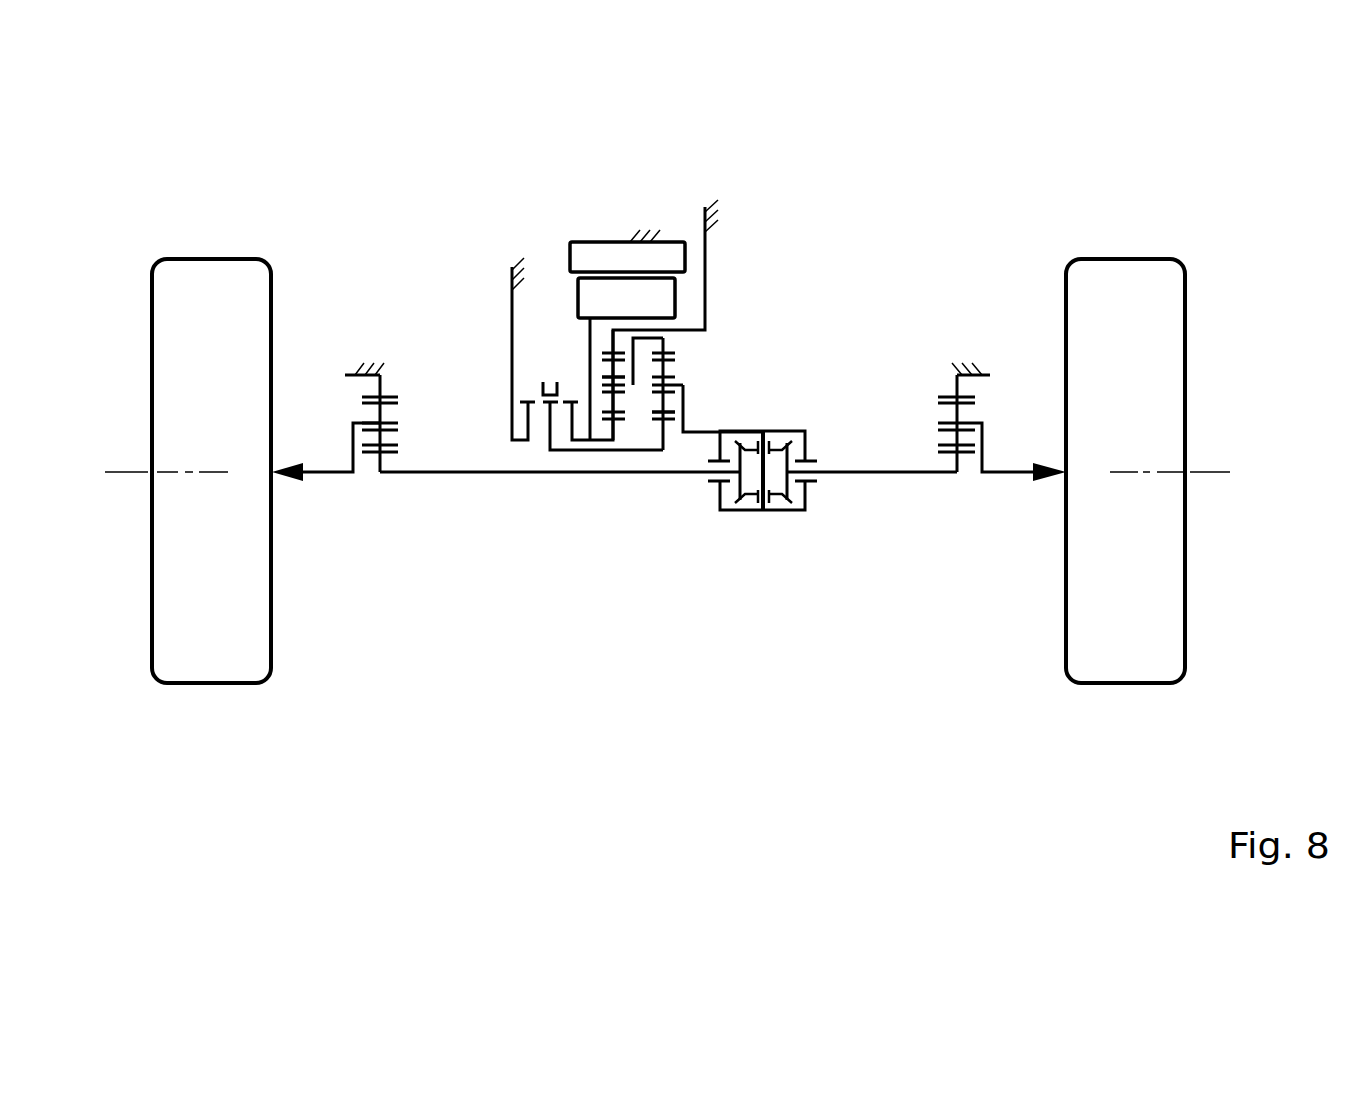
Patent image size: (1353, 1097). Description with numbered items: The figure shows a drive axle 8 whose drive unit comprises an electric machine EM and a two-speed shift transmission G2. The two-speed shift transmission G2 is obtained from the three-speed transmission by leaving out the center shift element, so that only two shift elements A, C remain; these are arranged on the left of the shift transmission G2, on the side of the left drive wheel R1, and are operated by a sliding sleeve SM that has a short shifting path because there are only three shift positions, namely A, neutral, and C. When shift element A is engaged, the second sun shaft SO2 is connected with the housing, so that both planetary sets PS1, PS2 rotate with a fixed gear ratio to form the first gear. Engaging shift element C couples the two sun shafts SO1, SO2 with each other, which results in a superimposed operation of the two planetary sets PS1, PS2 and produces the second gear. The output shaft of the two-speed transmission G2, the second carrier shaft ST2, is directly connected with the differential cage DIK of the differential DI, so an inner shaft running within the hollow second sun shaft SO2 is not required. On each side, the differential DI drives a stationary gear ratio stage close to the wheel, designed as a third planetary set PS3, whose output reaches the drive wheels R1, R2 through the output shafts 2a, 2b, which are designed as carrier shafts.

The drive axle 8 is at (805, 233).
The electric machine EM is at (611, 236).
The sliding sleeve SM is at (578, 251).
The shift element A is at (538, 366).
The shift element C is at (547, 341).
The second carrier shaft ST2 is at (684, 388).
The differential cage DIK is at (785, 432).
The differential DI is at (785, 536).
The first planetary set PS1 is at (613, 487).
The second planetary set PS2 is at (663, 487).
The third planetary set PS3 is at (380, 483).
The first sun shaft SO1 is at (597, 443).
The second sun shaft SO2 is at (655, 452).
The two-speed shift transmission G2 is at (632, 654).
The drive wheel R1 is at (233, 662).
The drive wheel R2 is at (1103, 662).
The output shaft 2a is at (325, 473).
The output shaft 2b is at (1012, 473).